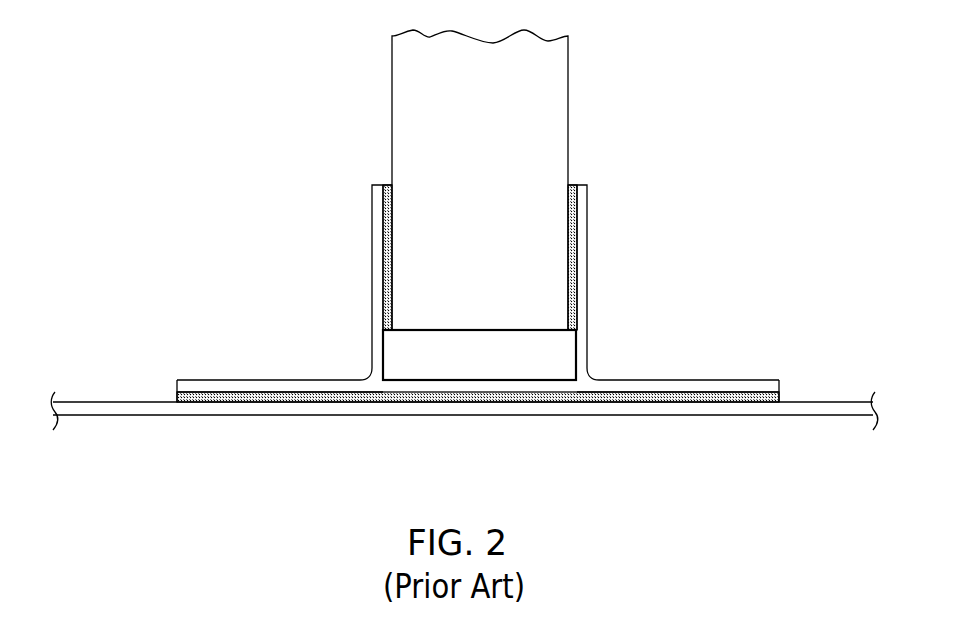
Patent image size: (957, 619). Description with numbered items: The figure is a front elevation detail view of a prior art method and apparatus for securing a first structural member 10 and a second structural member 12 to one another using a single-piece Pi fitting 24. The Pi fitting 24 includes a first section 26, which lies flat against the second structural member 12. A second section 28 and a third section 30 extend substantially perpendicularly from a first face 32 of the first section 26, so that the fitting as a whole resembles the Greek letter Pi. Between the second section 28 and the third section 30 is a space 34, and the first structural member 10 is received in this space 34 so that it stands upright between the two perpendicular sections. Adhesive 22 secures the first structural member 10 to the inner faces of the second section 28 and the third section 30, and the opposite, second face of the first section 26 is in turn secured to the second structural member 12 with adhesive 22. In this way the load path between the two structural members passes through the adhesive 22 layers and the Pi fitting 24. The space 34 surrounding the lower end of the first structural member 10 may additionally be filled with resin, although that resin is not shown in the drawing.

The first structural member 10 is at (495, 200).
The second structural member 12 is at (829, 408).
The adhesive 22 is at (385, 187).
The Pi fitting 24 is at (512, 388).
The first section 26 is at (236, 382).
The second section 28 is at (375, 270).
The third section 30 is at (587, 260).
The first face 32 is at (714, 378).
The space 34 is at (493, 369).